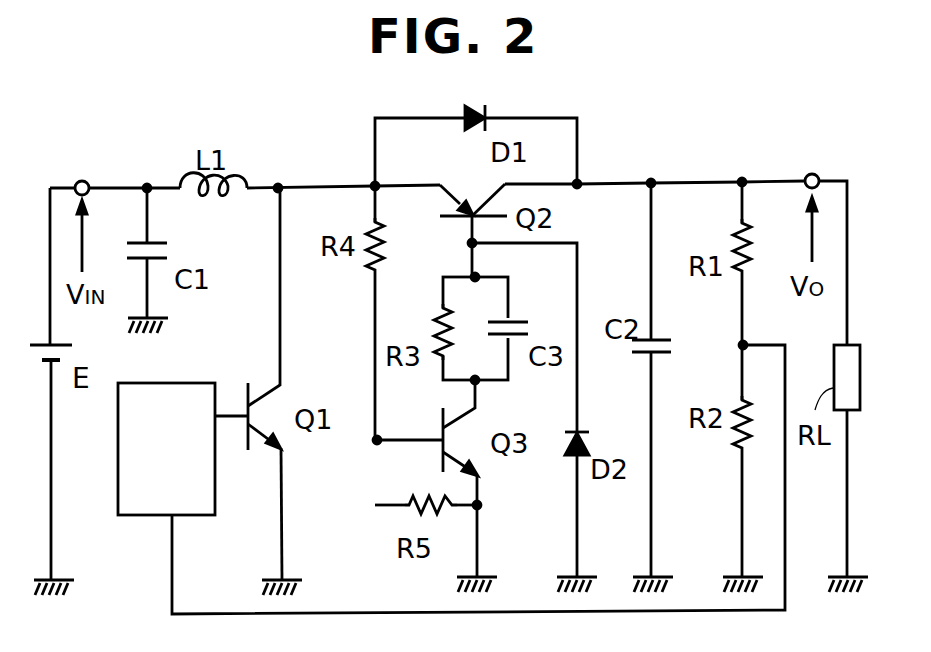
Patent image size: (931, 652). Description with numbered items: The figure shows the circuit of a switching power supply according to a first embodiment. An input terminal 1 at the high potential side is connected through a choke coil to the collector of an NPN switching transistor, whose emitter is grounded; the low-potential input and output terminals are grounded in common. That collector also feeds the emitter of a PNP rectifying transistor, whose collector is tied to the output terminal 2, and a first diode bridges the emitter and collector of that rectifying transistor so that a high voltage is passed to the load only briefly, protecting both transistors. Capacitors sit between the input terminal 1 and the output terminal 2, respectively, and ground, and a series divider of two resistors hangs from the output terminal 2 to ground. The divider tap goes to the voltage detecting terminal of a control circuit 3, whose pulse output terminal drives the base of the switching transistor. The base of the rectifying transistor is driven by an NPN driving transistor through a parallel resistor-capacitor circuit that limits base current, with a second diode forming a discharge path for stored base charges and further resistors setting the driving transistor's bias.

The input terminal 1 is at (87, 181).
The output terminal 2 is at (811, 174).
The control circuit 3 is at (190, 383).